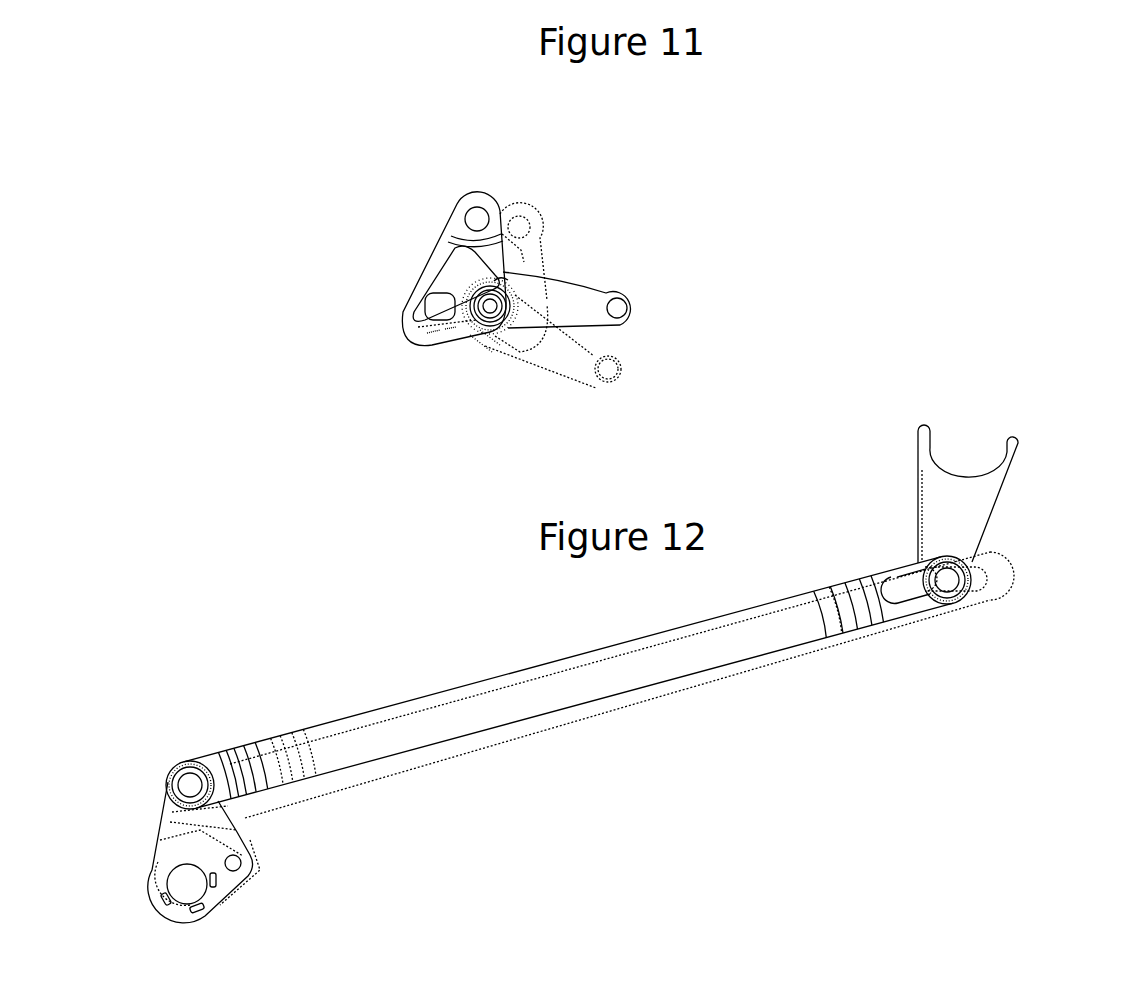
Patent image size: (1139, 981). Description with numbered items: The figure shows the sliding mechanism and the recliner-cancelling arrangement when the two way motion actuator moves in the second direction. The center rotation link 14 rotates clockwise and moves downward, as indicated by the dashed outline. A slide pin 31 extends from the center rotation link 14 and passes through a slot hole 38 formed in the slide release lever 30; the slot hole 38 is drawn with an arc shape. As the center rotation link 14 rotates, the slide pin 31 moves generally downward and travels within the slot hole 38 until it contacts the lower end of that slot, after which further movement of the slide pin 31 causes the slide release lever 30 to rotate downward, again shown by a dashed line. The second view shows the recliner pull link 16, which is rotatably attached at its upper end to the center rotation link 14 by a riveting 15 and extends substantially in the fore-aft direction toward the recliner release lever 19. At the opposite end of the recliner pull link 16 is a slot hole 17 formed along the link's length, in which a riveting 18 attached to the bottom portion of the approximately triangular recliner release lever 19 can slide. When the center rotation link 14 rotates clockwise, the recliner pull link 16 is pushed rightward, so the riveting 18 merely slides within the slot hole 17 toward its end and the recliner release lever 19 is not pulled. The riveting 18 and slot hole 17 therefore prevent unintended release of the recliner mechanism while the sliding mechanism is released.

In FIG. 11, the center rotation link 14 is at (503, 202).
In FIG. 12, the center rotation link 14 is at (159, 860).
In FIG. 12, the riveting 15 is at (187, 777).
In FIG. 12, the recliner pull link 16 is at (690, 675).
In FIG. 12, the slot hole 17 is at (915, 603).
In FIG. 12, the riveting 18 is at (958, 603).
In FIG. 12, the recliner release lever 19 is at (1004, 506).
In FIG. 11, the slide release lever 30 is at (631, 317).
In FIG. 11, the slide pin 31 is at (495, 332).
In FIG. 11, the slot hole 38 is at (496, 268).